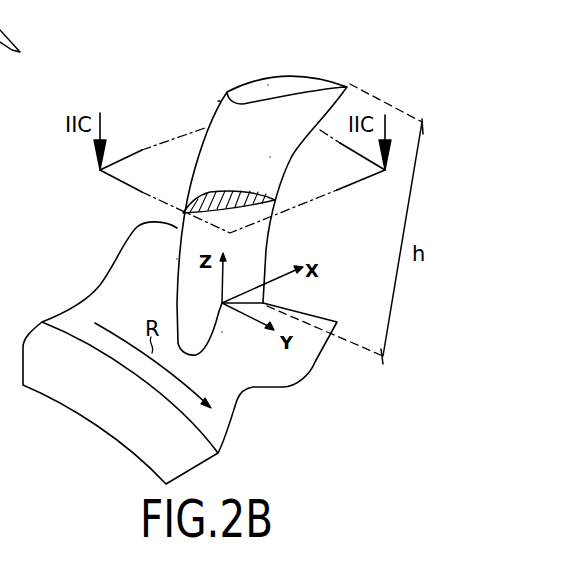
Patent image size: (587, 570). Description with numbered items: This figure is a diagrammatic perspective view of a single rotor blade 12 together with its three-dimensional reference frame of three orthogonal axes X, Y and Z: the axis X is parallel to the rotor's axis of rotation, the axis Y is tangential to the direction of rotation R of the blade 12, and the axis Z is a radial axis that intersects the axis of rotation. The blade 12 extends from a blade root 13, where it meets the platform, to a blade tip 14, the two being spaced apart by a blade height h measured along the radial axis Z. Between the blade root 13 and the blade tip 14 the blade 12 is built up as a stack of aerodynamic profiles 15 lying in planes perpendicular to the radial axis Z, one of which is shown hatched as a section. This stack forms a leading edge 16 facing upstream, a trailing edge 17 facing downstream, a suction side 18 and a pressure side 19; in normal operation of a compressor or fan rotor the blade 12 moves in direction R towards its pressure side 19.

The blade 12 is at (180, 97).
The blade root 13 is at (222, 331).
The blade tip 14 is at (276, 85).
The aerodynamic profiles 15 is at (208, 193).
The leading edge 16 is at (177, 259).
The trailing edge 17 is at (268, 232).
The suction side 18 is at (218, 101).
The pressure side 19 is at (270, 157).